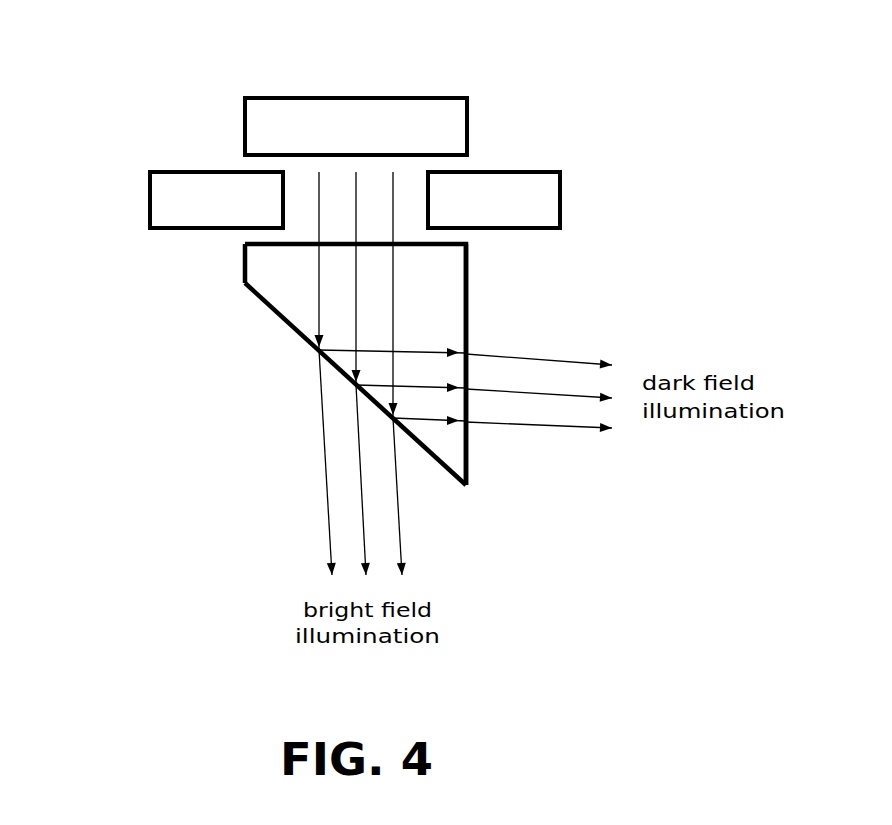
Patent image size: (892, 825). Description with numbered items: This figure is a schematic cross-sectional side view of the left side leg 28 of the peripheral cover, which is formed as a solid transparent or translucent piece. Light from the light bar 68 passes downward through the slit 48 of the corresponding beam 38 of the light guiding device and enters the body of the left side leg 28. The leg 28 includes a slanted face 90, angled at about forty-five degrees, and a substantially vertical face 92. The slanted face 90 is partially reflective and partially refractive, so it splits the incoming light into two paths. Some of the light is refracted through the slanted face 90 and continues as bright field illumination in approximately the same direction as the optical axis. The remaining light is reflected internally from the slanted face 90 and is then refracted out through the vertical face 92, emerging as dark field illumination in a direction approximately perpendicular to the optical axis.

The light bar 68 is at (375, 95).
The beam 38 is at (150, 209).
The slit 48 is at (404, 225).
The left side leg 28 is at (346, 364).
The slanted face 90 is at (292, 330).
The substantially vertical face 92 is at (467, 323).